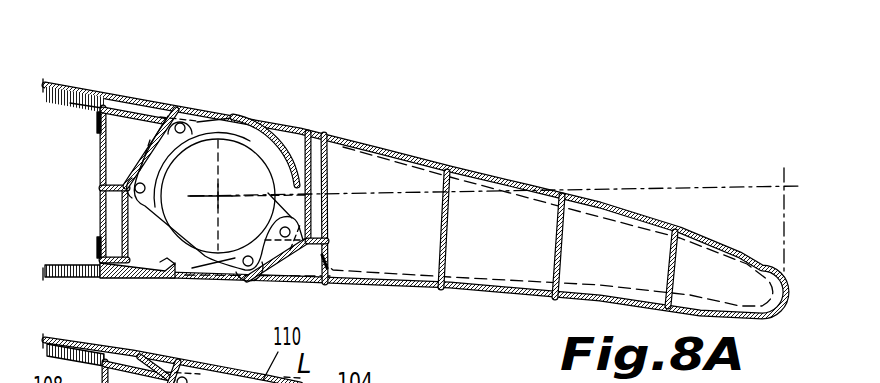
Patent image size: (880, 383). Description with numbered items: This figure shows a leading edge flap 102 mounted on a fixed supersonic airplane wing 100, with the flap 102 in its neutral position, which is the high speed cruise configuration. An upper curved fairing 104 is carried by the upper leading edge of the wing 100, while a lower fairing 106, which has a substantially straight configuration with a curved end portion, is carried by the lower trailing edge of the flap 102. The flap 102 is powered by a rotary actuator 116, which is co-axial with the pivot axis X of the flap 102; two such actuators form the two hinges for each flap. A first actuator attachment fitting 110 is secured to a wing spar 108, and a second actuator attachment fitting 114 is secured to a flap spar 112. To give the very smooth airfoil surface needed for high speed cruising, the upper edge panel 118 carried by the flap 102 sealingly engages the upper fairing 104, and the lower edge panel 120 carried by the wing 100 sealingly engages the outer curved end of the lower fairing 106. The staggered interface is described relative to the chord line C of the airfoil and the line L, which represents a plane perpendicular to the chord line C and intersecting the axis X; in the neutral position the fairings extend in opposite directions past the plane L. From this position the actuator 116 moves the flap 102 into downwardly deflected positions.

The fixed supersonic airplane wing 100 is at (67, 84).
The leading edge flap 102 is at (530, 181).
The upper curved fairing 104 is at (297, 128).
The lower fairing 106 is at (182, 278).
The wing spar 108 is at (102, 168).
The first actuator attachment fitting 110 is at (138, 275).
The flap spar 112 is at (326, 217).
The second actuator attachment fitting 114 is at (200, 262).
The rotary actuator 116 is at (203, 187).
The upper edge panel 118 is at (248, 116).
The lower edge panel 120 is at (170, 268).
The plane line L is at (227, 136).
The chord line C is at (652, 186).
The pivot axis X is at (213, 199).